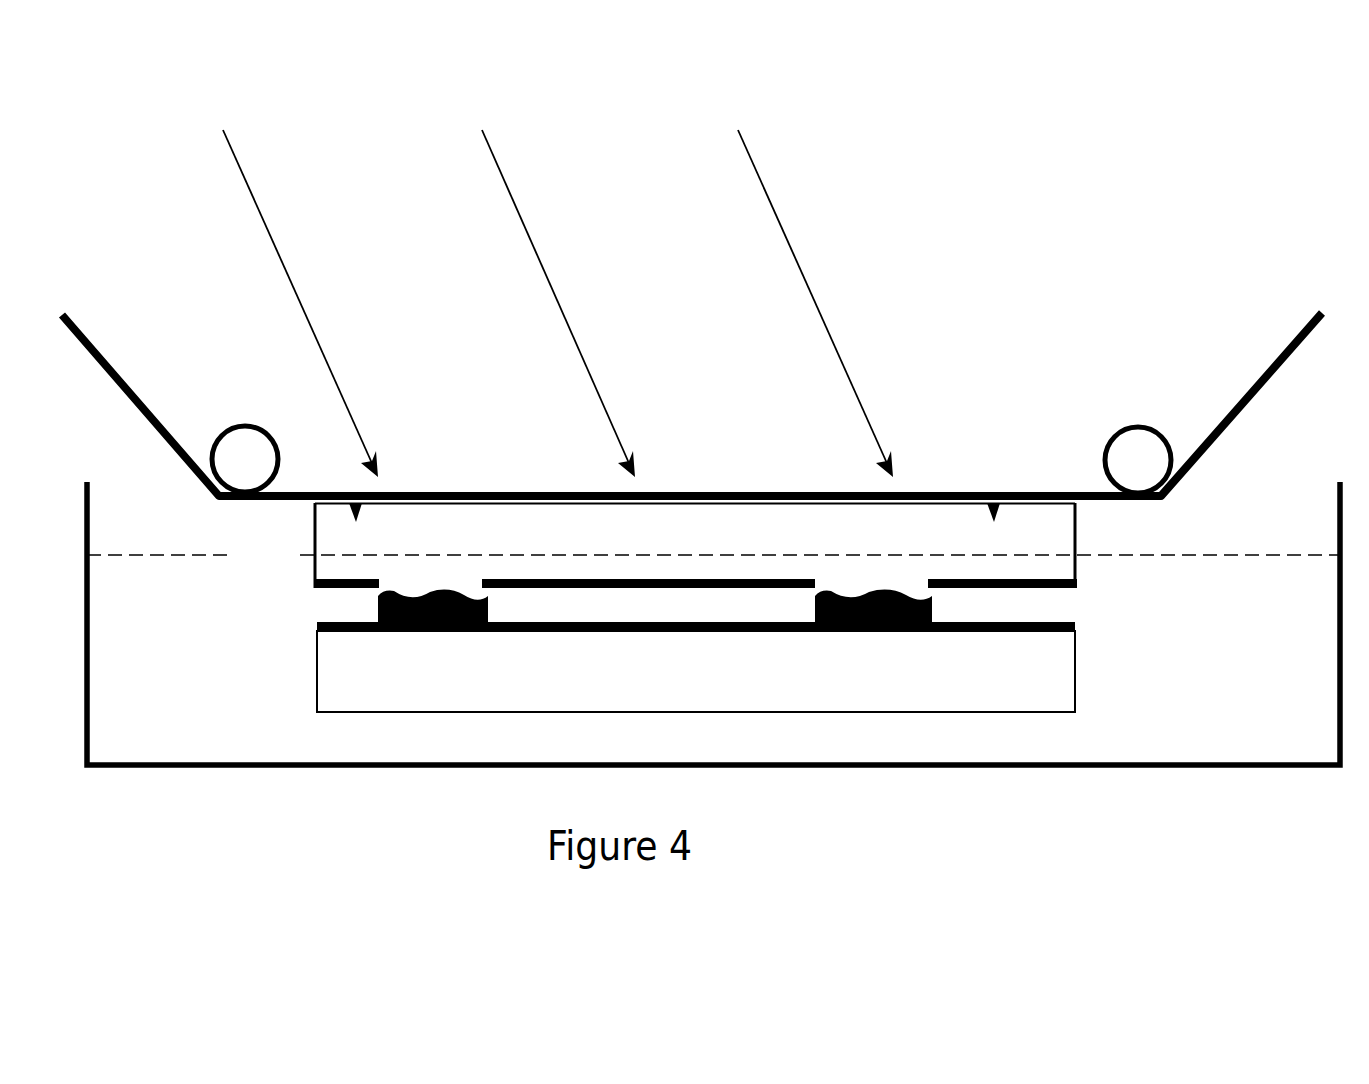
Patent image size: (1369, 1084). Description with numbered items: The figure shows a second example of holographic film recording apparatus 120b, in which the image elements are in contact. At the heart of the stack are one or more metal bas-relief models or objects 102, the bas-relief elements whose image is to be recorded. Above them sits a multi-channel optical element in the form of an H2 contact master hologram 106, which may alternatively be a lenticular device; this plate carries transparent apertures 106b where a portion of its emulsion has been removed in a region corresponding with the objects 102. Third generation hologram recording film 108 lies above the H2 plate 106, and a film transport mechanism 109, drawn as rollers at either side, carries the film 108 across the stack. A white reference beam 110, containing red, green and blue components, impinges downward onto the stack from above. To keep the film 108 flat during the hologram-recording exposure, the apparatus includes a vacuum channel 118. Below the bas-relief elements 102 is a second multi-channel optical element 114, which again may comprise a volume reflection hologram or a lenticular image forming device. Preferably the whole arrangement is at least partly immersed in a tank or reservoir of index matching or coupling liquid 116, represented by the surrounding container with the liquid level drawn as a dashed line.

The metal bas-relief models or objects 102 is at (355, 598).
The H2 contact master hologram 106 is at (657, 547).
The transparent apertures 106b is at (869, 575).
The H3 recording film 108 is at (692, 404).
The film transport mechanism 109 is at (237, 442).
The reference beam 110 is at (243, 238).
The second multi-channel optical element 114 is at (533, 693).
The index matching or coupling liquid 116 is at (1232, 718).
The vacuum channel 118 is at (335, 518).
The recording apparatus 120b is at (187, 807).